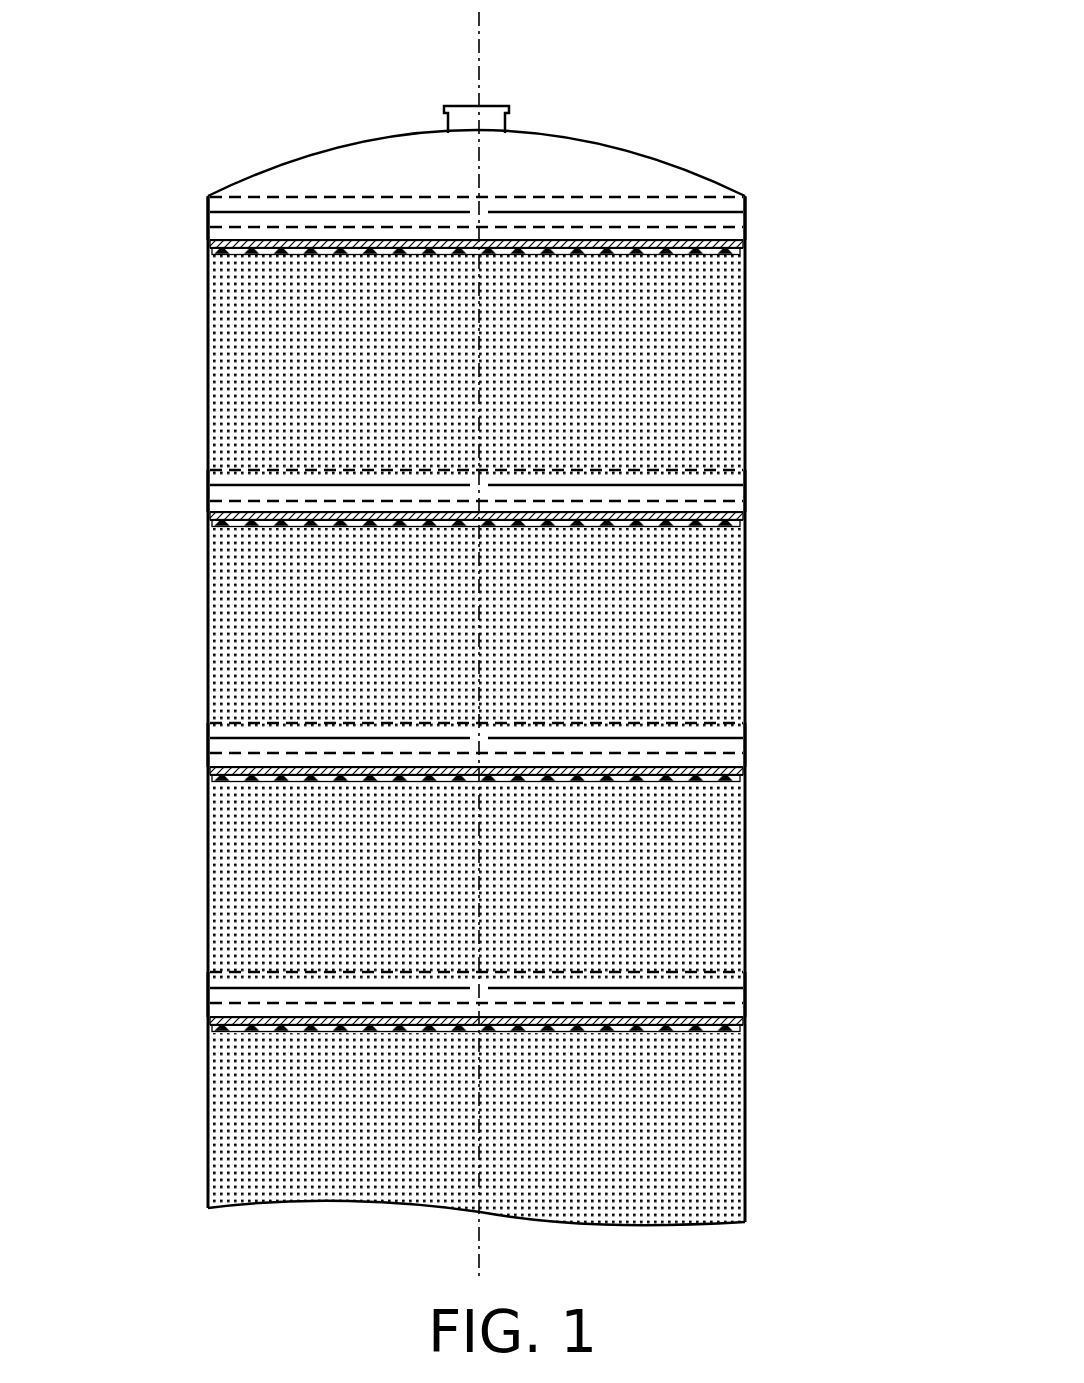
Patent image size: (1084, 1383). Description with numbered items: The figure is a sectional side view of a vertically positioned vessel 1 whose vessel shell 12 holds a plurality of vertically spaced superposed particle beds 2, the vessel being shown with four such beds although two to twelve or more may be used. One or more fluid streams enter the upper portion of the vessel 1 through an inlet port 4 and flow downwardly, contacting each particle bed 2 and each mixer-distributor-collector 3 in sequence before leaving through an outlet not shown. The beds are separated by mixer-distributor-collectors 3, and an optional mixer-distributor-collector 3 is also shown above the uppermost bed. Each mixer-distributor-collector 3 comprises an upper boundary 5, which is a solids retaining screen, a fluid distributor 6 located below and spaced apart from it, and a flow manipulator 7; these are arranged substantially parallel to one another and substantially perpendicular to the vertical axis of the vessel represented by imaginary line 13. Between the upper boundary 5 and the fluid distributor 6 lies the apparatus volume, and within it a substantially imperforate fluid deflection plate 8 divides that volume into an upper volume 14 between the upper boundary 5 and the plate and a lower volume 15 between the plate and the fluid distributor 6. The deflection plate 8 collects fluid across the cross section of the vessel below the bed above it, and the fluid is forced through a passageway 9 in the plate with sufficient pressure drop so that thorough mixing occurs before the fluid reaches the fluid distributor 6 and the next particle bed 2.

The vessel 1 is at (783, 90).
The particle bed 2 is at (680, 345).
The mixer-distributor-collector 3 is at (424, 621).
The inlet port 4 is at (445, 104).
The upper boundary 5 is at (575, 197).
The fluid distributor 6 is at (700, 228).
The flow manipulator 7 is at (511, 648).
The fluid deflection plate 8 is at (277, 212).
The passageway 9 is at (478, 212).
The vessel shell 12 is at (207, 1145).
The vertical axis 13 is at (482, 42).
The upper volume 14 is at (547, 482).
The lower volume 15 is at (560, 493).